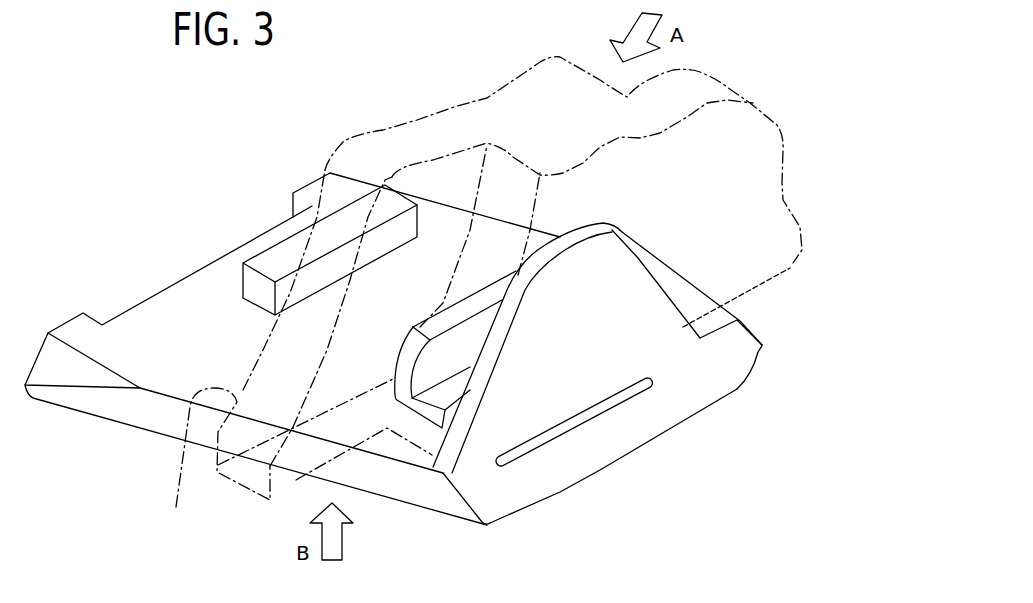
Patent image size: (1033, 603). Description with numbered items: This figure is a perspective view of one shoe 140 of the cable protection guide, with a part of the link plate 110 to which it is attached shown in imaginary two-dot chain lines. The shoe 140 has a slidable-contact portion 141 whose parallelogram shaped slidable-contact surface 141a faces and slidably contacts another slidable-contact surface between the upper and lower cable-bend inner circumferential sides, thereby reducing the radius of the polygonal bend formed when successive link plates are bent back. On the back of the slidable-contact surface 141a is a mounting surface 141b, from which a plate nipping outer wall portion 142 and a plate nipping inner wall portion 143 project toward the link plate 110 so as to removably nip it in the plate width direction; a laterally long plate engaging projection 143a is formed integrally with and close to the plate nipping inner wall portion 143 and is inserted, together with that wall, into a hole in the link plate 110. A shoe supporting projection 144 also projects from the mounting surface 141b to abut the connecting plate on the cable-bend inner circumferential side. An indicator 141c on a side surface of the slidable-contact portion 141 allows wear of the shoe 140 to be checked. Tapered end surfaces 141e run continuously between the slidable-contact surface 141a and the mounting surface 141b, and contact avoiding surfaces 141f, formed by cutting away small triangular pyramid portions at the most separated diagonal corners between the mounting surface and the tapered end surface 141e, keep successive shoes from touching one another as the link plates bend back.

The shoe 140 is at (166, 131).
The slidable-contact portion 141 is at (835, 422).
The slidable-contact surface 141a is at (572, 481).
The mounting surface 141b is at (707, 323).
The indicator 141c is at (623, 400).
The tapered end surface 141e is at (438, 497).
The contact avoiding surface 141f is at (73, 372).
The plate nipping outer wall portion 142 is at (616, 252).
The plate nipping inner wall portion 143 is at (488, 298).
The plate engaging projection 143a is at (438, 385).
The shoe supporting projection 144 is at (280, 258).
The link plate 110 is at (478, 298).